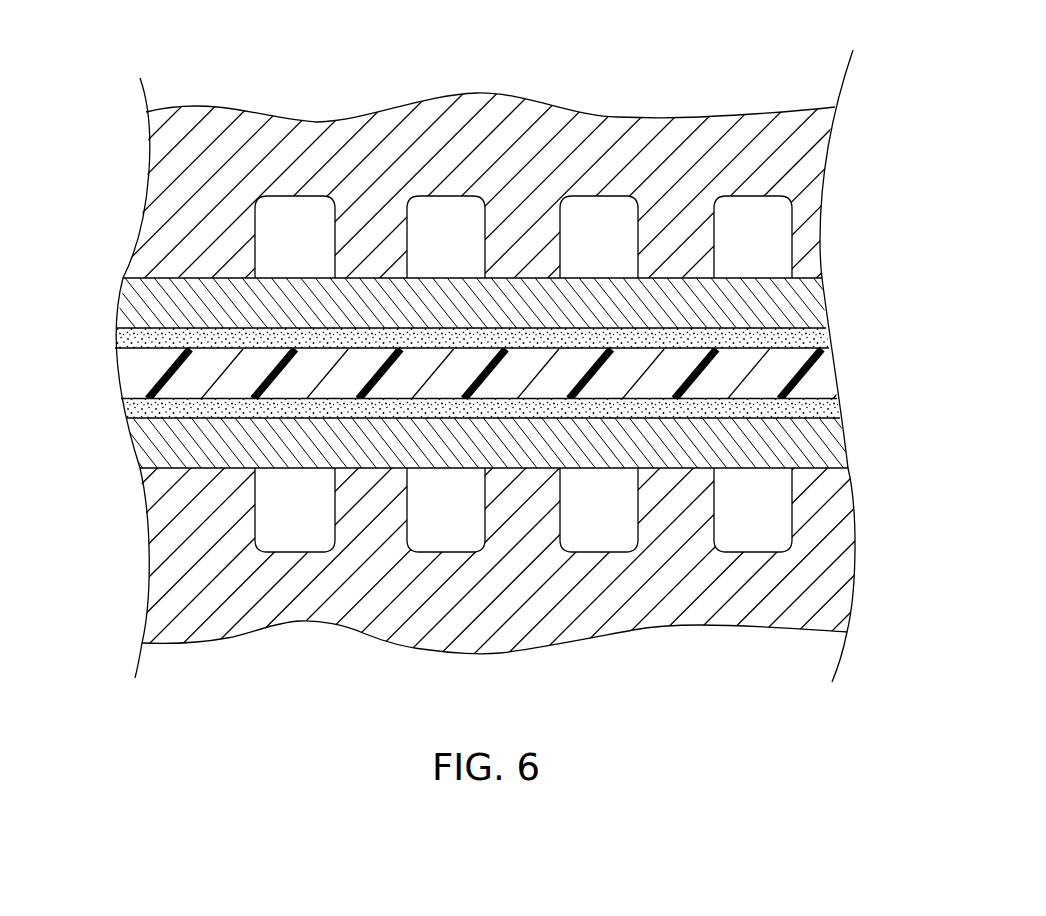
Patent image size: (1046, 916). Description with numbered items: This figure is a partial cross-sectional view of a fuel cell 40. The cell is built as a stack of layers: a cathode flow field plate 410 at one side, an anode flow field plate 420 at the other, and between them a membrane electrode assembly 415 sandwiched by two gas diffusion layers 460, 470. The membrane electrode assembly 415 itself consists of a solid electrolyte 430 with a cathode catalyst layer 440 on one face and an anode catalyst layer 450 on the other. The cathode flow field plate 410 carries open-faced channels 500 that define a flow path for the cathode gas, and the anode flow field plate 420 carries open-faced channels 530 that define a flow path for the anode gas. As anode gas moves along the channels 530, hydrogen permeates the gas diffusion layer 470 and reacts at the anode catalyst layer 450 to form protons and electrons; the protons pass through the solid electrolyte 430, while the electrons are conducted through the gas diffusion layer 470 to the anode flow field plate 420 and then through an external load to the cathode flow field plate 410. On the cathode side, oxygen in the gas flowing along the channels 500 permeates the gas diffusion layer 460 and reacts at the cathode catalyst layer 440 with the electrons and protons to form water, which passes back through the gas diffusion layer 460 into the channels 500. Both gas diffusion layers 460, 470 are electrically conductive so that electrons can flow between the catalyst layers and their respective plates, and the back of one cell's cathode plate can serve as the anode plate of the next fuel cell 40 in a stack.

The fuel cell 40 is at (660, 59).
The cathode flow field plate 410 is at (655, 600).
The anode flow field plate 420 is at (477, 120).
The membrane electrode assembly 415 is at (104, 328).
The solid electrolyte 430 is at (820, 372).
The cathode catalyst layer 440 is at (830, 407).
The anode catalyst layer 450 is at (818, 337).
The gas diffusion layer 460 is at (830, 451).
The gas diffusion layer 470 is at (800, 297).
The open-faced channels 500 is at (424, 572).
The open-faced channels 530 is at (411, 181).